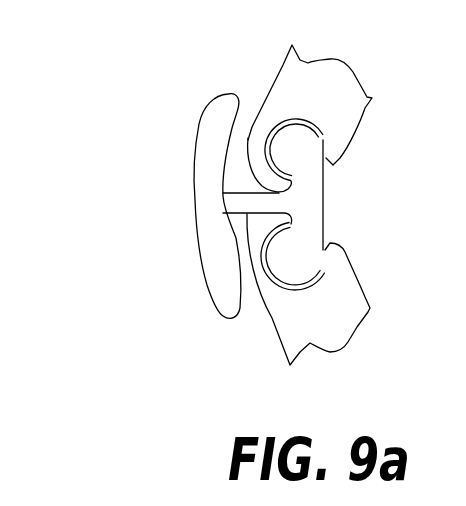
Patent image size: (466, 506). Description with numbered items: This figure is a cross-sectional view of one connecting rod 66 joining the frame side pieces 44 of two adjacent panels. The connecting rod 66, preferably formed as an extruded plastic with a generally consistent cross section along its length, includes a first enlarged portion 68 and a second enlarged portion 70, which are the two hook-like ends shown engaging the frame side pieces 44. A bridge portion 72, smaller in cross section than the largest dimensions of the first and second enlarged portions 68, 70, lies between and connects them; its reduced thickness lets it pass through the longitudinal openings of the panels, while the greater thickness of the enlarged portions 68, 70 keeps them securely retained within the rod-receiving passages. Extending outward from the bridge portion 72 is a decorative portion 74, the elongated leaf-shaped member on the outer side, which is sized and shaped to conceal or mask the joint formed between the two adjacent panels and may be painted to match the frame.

The frame side piece 44 is at (283, 78).
The connecting rod 66 is at (242, 206).
The first enlarged portion 68 is at (300, 255).
The second enlarged portion 70 is at (302, 142).
The bridge portion 72 is at (303, 205).
The decorative portion 74 is at (197, 188).